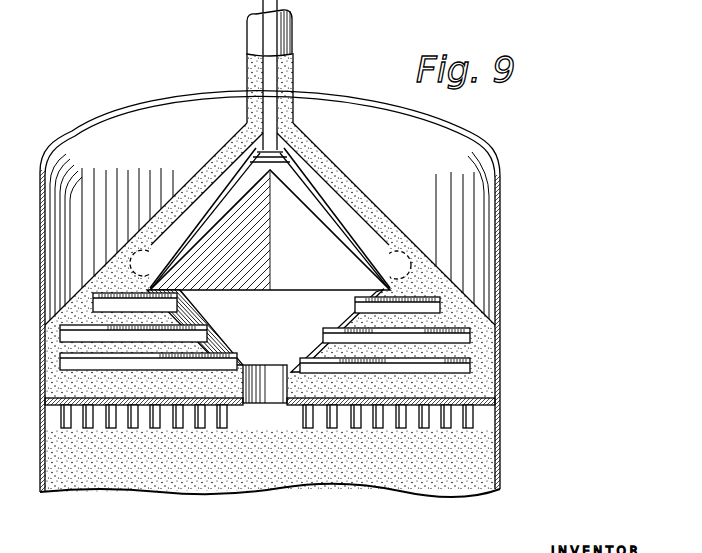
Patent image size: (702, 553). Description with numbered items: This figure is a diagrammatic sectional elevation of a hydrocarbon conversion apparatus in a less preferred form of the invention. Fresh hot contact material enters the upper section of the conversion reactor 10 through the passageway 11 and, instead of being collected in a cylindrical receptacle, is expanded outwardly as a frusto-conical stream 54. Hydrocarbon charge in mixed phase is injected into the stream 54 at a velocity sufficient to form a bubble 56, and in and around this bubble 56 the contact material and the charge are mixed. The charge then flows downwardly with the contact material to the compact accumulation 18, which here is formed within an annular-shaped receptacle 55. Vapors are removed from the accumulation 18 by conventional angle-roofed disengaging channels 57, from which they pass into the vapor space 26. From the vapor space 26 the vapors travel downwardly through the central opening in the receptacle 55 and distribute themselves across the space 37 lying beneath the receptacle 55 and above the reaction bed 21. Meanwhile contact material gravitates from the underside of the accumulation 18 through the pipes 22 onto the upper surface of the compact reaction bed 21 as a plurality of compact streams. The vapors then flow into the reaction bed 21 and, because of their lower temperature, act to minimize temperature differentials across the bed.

The conversion reactor 10 is at (499, 271).
The passageway 11 is at (291, 34).
The accumulation of contact material 18 is at (479, 386).
The reaction bed 21 is at (423, 456).
The pipes 22 is at (474, 423).
The vapor space 26 is at (311, 266).
The space beneath receptacle 37 is at (458, 424).
The frusto-conical stream 54 is at (342, 193).
The annular-shaped receptacle 55 is at (283, 390).
The bubble 56 is at (405, 262).
The angle-roofed disengaging channels 57 is at (360, 312).